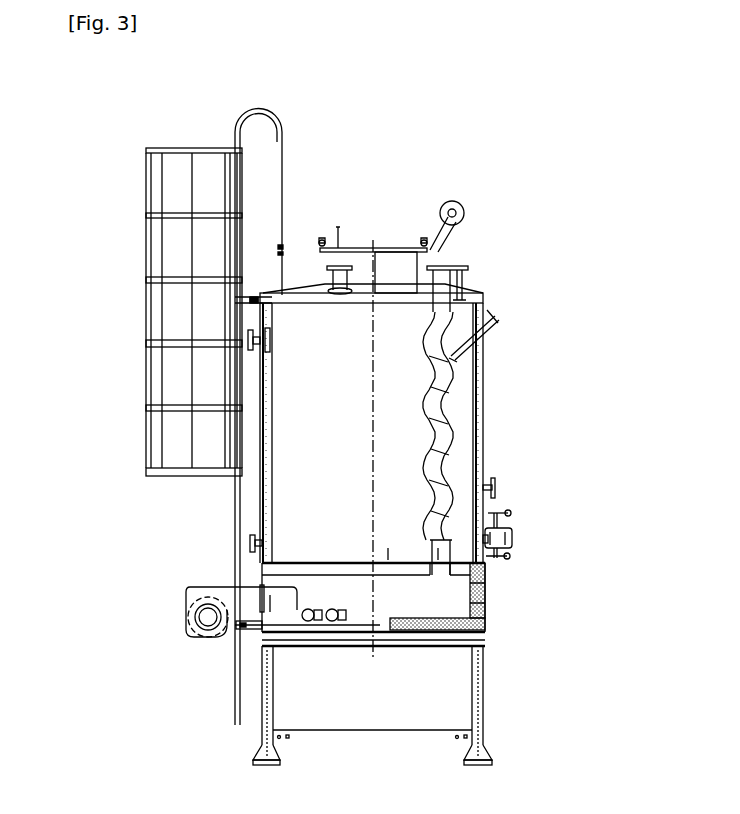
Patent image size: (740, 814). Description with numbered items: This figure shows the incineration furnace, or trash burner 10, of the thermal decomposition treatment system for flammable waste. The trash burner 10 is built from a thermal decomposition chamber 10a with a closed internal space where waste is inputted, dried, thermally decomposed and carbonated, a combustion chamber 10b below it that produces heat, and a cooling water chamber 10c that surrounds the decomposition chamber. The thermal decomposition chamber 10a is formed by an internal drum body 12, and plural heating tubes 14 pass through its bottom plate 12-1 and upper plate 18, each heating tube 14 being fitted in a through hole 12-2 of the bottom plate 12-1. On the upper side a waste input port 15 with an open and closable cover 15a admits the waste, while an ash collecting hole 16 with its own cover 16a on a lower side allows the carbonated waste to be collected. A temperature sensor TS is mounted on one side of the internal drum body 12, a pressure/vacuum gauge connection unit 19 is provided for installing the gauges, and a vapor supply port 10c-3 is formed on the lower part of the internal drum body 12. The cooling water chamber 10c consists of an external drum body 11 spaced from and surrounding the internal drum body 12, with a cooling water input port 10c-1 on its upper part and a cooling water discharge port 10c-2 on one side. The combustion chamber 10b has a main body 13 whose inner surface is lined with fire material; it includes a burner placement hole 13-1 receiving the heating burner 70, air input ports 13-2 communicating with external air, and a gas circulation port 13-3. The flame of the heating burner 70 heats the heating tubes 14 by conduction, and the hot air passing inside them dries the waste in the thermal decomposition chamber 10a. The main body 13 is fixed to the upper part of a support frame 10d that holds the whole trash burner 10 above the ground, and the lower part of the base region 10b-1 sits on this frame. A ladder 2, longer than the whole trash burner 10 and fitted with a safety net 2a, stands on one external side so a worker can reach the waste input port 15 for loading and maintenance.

The ladder 2 is at (236, 113).
The safety net 2a is at (148, 186).
The trash burner 10 is at (481, 158).
The thermal decomposition chamber 10a is at (485, 415).
The combustion chamber 10b is at (489, 578).
The bottom insulation plate 10b-1 is at (487, 625).
The cooling water chamber 10c is at (485, 388).
The cooling water input port 10c-1 is at (265, 345).
The cooling water discharge port 10c-2 is at (495, 487).
The vapor supply port 10c-3 is at (255, 545).
The support frame 10d is at (483, 712).
The external drum body 11 is at (483, 350).
The internal drum body 12 is at (476, 448).
The bottom plate 12-1 is at (391, 550).
The through hole 12-2 is at (440, 552).
The main body 13 is at (487, 600).
The burner placement hole 13-1 is at (265, 580).
The air input port 13-2 is at (268, 633).
The gas circulation port 13-3 is at (332, 622).
The heating tube 14 is at (337, 277).
The waste input port 15 is at (400, 249).
The cover 15a is at (355, 250).
The ash collecting hole 16 is at (512, 520).
The cover 16a is at (507, 553).
The upper plate 18 is at (365, 287).
The pressure/vacuum gauge connection unit 19 is at (460, 268).
The heating burner 70 is at (195, 607).
The temperature sensor TS is at (497, 322).